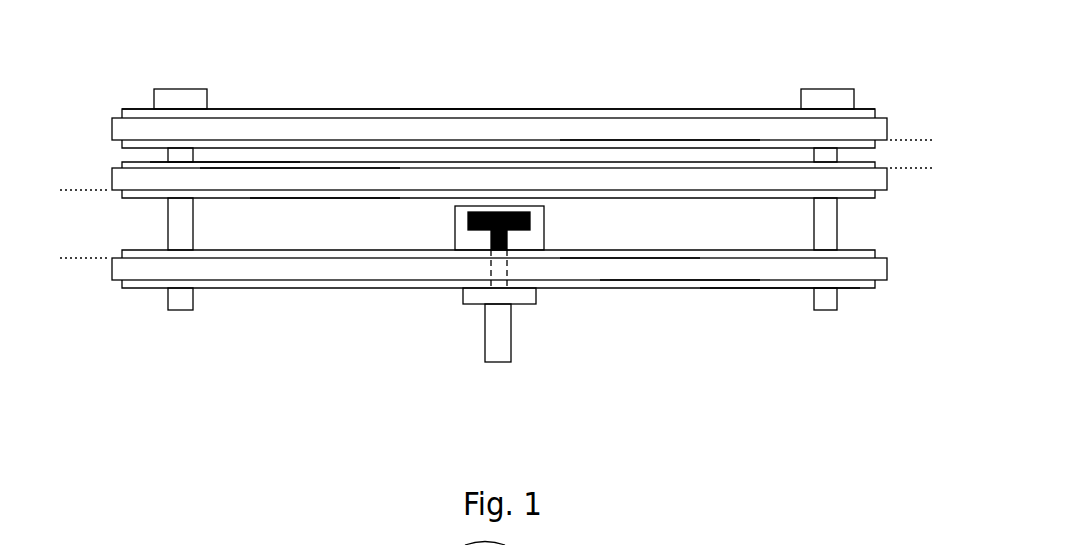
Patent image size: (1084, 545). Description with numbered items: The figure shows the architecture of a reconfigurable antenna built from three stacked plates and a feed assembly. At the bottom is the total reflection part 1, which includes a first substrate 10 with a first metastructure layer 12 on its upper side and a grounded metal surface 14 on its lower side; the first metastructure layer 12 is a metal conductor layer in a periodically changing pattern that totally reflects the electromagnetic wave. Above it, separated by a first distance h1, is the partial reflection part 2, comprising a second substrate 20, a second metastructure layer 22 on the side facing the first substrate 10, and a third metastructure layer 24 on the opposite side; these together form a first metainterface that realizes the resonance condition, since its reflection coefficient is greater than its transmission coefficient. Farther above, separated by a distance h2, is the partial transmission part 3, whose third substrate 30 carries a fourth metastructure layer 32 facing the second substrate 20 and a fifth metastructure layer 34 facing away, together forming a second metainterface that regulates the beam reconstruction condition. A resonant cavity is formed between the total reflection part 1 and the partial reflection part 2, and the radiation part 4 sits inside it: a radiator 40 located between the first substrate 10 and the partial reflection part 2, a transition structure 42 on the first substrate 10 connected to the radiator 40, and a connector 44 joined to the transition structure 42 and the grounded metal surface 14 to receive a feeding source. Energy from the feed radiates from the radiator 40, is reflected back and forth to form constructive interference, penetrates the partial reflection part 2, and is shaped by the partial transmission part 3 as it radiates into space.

The total reflection part 1 is at (100, 274).
The partial reflection part 2 is at (893, 197).
The partial transmission part 3 is at (103, 127).
The radiation part 4 is at (474, 228).
The first substrate 10 is at (679, 262).
The first metastructure layer 12 is at (628, 258).
The grounded metal surface 14 is at (766, 288).
The second substrate 20 is at (268, 177).
The second metastructure layer 22 is at (327, 192).
The third metastructure layer 24 is at (217, 165).
The third substrate 30 is at (335, 115).
The fourth metastructure layer 32 is at (660, 140).
The fifth metastructure layer 34 is at (477, 108).
The radiator 40 is at (475, 210).
The transition structure 42 is at (512, 305).
The connector 44 is at (502, 268).
The first distance h1 is at (84, 224).
The first distance h2 is at (925, 150).